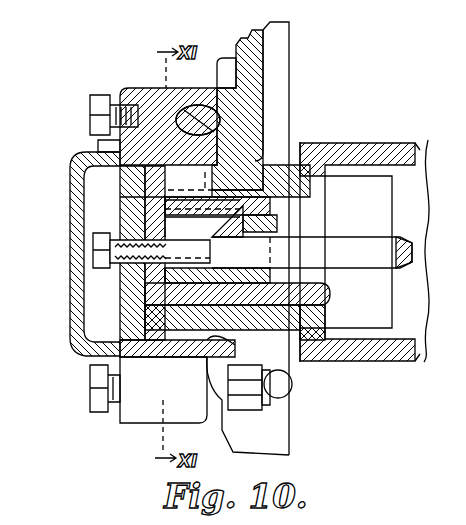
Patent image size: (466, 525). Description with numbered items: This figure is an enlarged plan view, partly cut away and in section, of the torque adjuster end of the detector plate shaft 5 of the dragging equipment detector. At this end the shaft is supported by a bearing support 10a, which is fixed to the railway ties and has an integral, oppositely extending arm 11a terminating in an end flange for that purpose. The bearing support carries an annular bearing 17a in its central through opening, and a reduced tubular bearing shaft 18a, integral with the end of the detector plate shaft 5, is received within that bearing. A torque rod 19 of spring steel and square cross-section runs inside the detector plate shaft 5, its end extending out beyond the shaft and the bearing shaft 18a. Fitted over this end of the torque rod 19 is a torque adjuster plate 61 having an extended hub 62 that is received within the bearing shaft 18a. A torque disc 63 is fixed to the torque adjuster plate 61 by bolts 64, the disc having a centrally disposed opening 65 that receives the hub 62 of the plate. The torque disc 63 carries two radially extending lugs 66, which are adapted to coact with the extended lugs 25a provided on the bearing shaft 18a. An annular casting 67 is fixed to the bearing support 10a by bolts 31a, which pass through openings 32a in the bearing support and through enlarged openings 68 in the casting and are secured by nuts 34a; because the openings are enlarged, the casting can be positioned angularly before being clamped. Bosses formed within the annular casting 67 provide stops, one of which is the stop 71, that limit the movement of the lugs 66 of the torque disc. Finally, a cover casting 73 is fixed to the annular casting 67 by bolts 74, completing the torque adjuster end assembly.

The detector plate shaft 5 is at (378, 148).
The bearing support 10a is at (280, 160).
The arm 11a is at (278, 62).
The annular bearing 17a is at (298, 172).
The bearing shaft 18a is at (290, 305).
The torque rod 19 is at (370, 238).
The extended lug 25a is at (176, 208).
The bolt 31a is at (224, 60).
The opening 32a is at (226, 126).
The nut 34a is at (255, 402).
The torque adjuster plate 61 is at (120, 184).
The extended hub 62 is at (277, 232).
The torque disc 63 is at (152, 356).
The bolt 64 is at (114, 266).
The opening 65 is at (136, 294).
The lug 66 is at (175, 194).
The annular casting 67 is at (140, 88).
The enlarged opening 68 is at (195, 104).
The stop 71 is at (100, 148).
The cover casting 73 is at (72, 184).
The bolt 74 is at (102, 96).